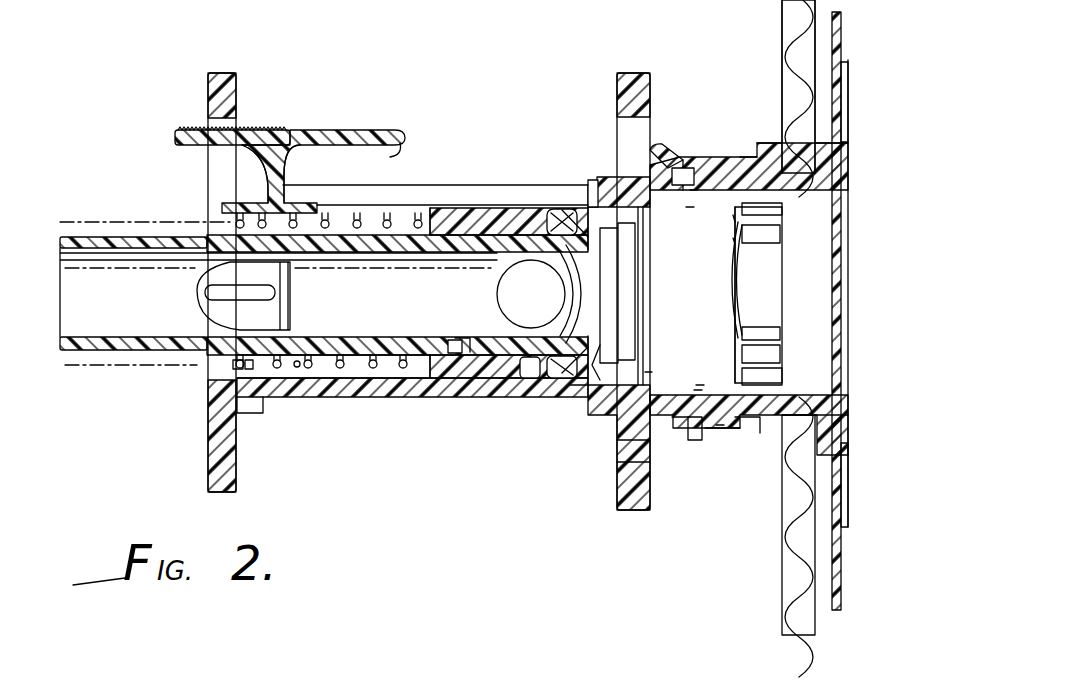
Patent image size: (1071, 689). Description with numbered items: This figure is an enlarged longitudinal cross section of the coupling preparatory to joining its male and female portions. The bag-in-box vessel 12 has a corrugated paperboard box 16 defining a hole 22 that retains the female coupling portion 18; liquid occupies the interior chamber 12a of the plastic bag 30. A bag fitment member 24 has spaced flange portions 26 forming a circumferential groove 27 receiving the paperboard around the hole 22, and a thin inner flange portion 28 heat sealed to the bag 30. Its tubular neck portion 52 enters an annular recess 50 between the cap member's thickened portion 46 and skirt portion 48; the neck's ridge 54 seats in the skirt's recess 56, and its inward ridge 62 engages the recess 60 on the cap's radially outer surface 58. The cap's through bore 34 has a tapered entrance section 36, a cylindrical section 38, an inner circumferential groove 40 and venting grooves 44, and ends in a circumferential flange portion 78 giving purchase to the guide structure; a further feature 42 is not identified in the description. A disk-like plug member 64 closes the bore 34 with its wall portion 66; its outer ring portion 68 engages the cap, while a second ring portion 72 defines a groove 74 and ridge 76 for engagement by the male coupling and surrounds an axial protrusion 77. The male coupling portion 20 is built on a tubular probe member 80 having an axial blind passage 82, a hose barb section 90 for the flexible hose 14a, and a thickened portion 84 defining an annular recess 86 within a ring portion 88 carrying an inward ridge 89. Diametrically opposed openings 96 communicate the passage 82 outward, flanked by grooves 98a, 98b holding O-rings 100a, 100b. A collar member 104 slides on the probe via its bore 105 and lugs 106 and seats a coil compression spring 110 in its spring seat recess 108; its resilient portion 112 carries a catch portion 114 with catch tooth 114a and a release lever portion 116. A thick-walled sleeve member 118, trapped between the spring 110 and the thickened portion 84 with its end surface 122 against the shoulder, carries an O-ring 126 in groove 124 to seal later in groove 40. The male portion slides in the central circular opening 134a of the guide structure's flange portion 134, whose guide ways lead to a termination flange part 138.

The bag-in-box vessel 12 is at (781, 532).
The interior chamber 12a is at (895, 97).
The flexible hose 14a is at (95, 222).
The box 16 is at (783, 22).
The female coupling portion 18 is at (683, 158).
The male coupling portion 20 is at (470, 184).
The hole 22 is at (848, 178).
The bag fitment member 24 is at (747, 163).
The flange portions 26 is at (760, 143).
The circumferential groove 27 is at (817, 153).
The inner flange portion 28 is at (848, 68).
The plastic bag 30 is at (840, 40).
The through bore 34 is at (700, 385).
The entrance section 36 is at (648, 372).
The cylindrical section 38 is at (733, 218).
The circumferential groove 40 is at (758, 372).
The seat ring 42 is at (768, 395).
The venting grooves 44 is at (698, 388).
The thickened portion 46 is at (617, 465).
The skirt portion 48 is at (723, 427).
The annular recess 50 is at (628, 447).
The neck portion 52 is at (750, 433).
The circumferential ridge 54 is at (695, 440).
The recess 56 is at (680, 447).
The radially outer surface 58 is at (723, 165).
The recess 60 is at (693, 190).
The ridge 62 is at (690, 214).
The plug member 64 is at (783, 222).
The wall portion 66 is at (752, 337).
The outer ring portion 68 is at (782, 208).
The second ring portion 72 is at (782, 266).
The groove 74 is at (780, 234).
The ridge 76 is at (733, 240).
The protrusion 77 is at (733, 285).
The flange portion 78 is at (660, 145).
The probe member 80 is at (393, 375).
The blind passage 82 is at (83, 330).
The thickened portion 84 is at (575, 392).
The annular recess 86 is at (600, 348).
The ring portion 88 is at (608, 225).
The ridge 89 is at (643, 258).
The hose barb section 90 is at (145, 352).
The openings 96 is at (497, 292).
The first annular groove 98a is at (548, 395).
The second annular groove 98b is at (450, 352).
The sealing member 100a is at (560, 343).
The sealing member 100b is at (457, 347).
The collar member 104 is at (285, 392).
The bore 105 is at (228, 313).
The lugs 106 is at (207, 293).
The spring seat recess 108 is at (300, 395).
The coil compression spring 110 is at (340, 374).
The resilient portion 112 is at (286, 170).
The catch portion 114 is at (360, 130).
The catch tooth 114a is at (398, 150).
The release lever portion 116 is at (178, 130).
The sleeve member 118 is at (445, 382).
The end surface 122 is at (590, 195).
The groove 124 is at (550, 210).
The sealing member 126 is at (540, 385).
The flange portion 134 is at (615, 497).
The central circular opening 134a is at (470, 393).
The termination flange part 138 is at (232, 76).